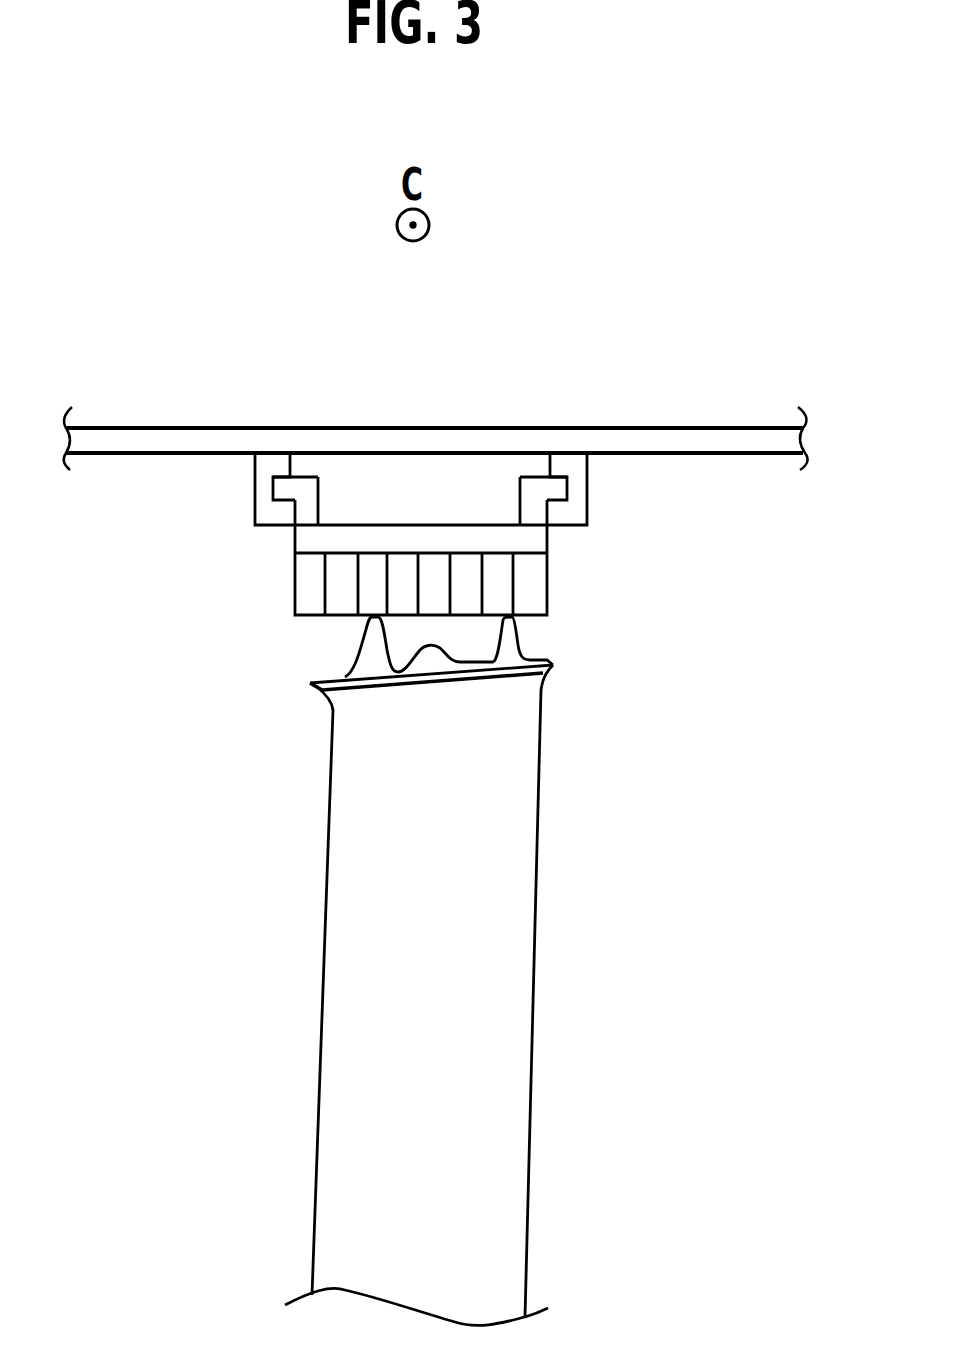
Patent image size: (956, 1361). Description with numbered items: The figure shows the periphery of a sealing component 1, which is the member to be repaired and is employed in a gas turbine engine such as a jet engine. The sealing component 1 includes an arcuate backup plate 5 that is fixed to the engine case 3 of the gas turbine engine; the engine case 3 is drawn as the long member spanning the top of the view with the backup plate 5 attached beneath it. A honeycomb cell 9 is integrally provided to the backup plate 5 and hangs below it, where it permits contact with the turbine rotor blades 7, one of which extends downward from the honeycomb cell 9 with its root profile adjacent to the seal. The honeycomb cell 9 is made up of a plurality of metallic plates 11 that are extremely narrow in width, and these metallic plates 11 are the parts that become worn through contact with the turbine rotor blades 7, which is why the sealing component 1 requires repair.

The sealing component 1 is at (567, 577).
The engine case 3 is at (703, 427).
The backup plate 5 is at (420, 522).
The turbine rotor blades 7 is at (534, 997).
The honeycomb cell 9 is at (530, 620).
The metallic plates 11 is at (352, 586).